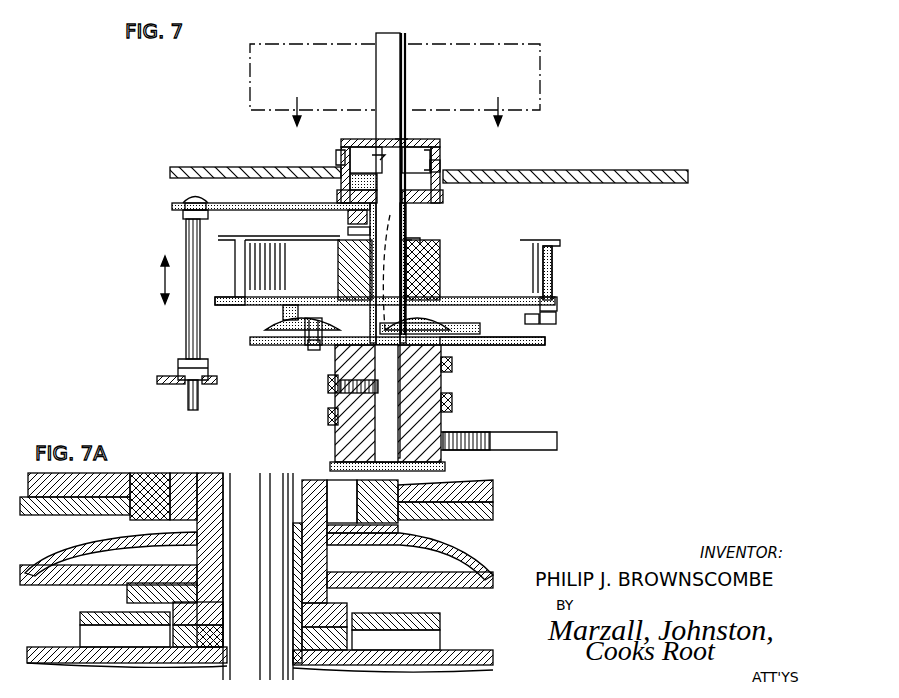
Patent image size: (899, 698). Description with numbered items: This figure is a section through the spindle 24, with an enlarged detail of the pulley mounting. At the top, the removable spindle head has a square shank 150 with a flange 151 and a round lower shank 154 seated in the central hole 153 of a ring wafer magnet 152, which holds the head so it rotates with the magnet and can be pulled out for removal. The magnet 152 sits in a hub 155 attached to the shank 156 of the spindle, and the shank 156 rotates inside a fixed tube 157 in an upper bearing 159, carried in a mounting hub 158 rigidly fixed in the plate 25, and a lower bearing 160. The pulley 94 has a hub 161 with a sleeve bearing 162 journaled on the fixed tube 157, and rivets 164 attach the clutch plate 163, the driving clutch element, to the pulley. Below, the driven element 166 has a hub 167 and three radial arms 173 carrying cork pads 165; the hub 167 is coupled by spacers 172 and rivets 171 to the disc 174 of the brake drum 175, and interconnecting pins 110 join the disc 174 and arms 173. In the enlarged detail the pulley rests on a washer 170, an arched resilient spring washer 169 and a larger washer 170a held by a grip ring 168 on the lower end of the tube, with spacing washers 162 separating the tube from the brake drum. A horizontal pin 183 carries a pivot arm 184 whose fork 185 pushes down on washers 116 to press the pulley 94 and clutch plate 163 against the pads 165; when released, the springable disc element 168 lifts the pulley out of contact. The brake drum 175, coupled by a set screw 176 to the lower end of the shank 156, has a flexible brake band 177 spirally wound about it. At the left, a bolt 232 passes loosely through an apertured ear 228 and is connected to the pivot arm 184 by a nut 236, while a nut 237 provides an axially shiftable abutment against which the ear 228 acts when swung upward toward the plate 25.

In FIG. 7, the spindle 24 is at (401, 42).
In FIG. 7, the plate 25 is at (232, 166).
In FIG. 7, the pulley 94 is at (500, 271).
In FIG. 7A, the pulley 94 is at (494, 490).
In FIG. 7, the interconnecting pins 110 is at (300, 346).
In FIG. 7, the washers 116 is at (348, 216).
In FIG. 7, the shank 150 is at (385, 74).
In FIG. 7, the flange 151 is at (432, 147).
In FIG. 7, the wafer magnet 152 is at (438, 153).
In FIG. 7, the central hole 153 is at (338, 153).
In FIG. 7, the lower shank 154 is at (404, 140).
In FIG. 7, the hub 155 is at (441, 166).
In FIG. 7, the shank 156 is at (412, 243).
In FIG. 7A, the shank 156 is at (273, 543).
In FIG. 7, the fixed tube 157 is at (408, 226).
In FIG. 7A, the fixed tube 157 is at (213, 480).
In FIG. 7, the mounting hub 158 is at (444, 196).
In FIG. 7, the bearing 159 is at (350, 185).
In FIG. 7, the bearing 160 is at (425, 300).
In FIG. 7, the hub 161 is at (338, 258).
In FIG. 7A, the hub 161 is at (148, 474).
In FIG. 7, the sleeve bearing 162 is at (348, 231).
In FIG. 7A, the sleeve bearing 162 is at (185, 474).
In FIG. 7, the clutch plate 163 is at (237, 306).
In FIG. 7A, the clutch plate 163 is at (494, 509).
In FIG. 7, the rivets 164 is at (295, 270).
In FIG. 7, the cork pads 165 is at (283, 311).
In FIG. 7, the driven element 166 is at (545, 323).
In FIG. 7A, the driven element 166 is at (86, 610).
In FIG. 7, the hub 167 is at (475, 330).
In FIG. 7A, the hub 167 is at (420, 616).
In FIG. 7, the grip ring 168 is at (440, 324).
In FIG. 7A, the grip ring 168 is at (382, 575).
In FIG. 7, the arched resilient spring washer 169 is at (279, 266).
In FIG. 7A, the arched resilient spring washer 169 is at (470, 550).
In FIG. 7, the washer 170 is at (432, 270).
In FIG. 7A, the washer 170 is at (400, 529).
In FIG. 7A, the larger washer 170a is at (138, 560).
In FIG. 7, the rivets 171 is at (305, 332).
In FIG. 7, the spacers 172 is at (312, 349).
In FIG. 7, the radial arms 173 is at (533, 326).
In FIG. 7, the disc 174 is at (478, 347).
In FIG. 7A, the disc 174 is at (470, 651).
In FIG. 7, the brake drum 175 is at (335, 440).
In FIG. 7, the set screw 176 is at (338, 397).
In FIG. 7, the brake band 177 is at (340, 386).
In FIG. 7, the pin 183 is at (350, 205).
In FIG. 7, the pivot arm 184 is at (216, 205).
In FIG. 7, the fork 185 is at (386, 273).
In FIG. 7, the apertured ear 228 is at (205, 388).
In FIG. 7, the bolt 232 is at (183, 327).
In FIG. 7, the nut 236 is at (183, 216).
In FIG. 7, the nut 237 is at (209, 370).